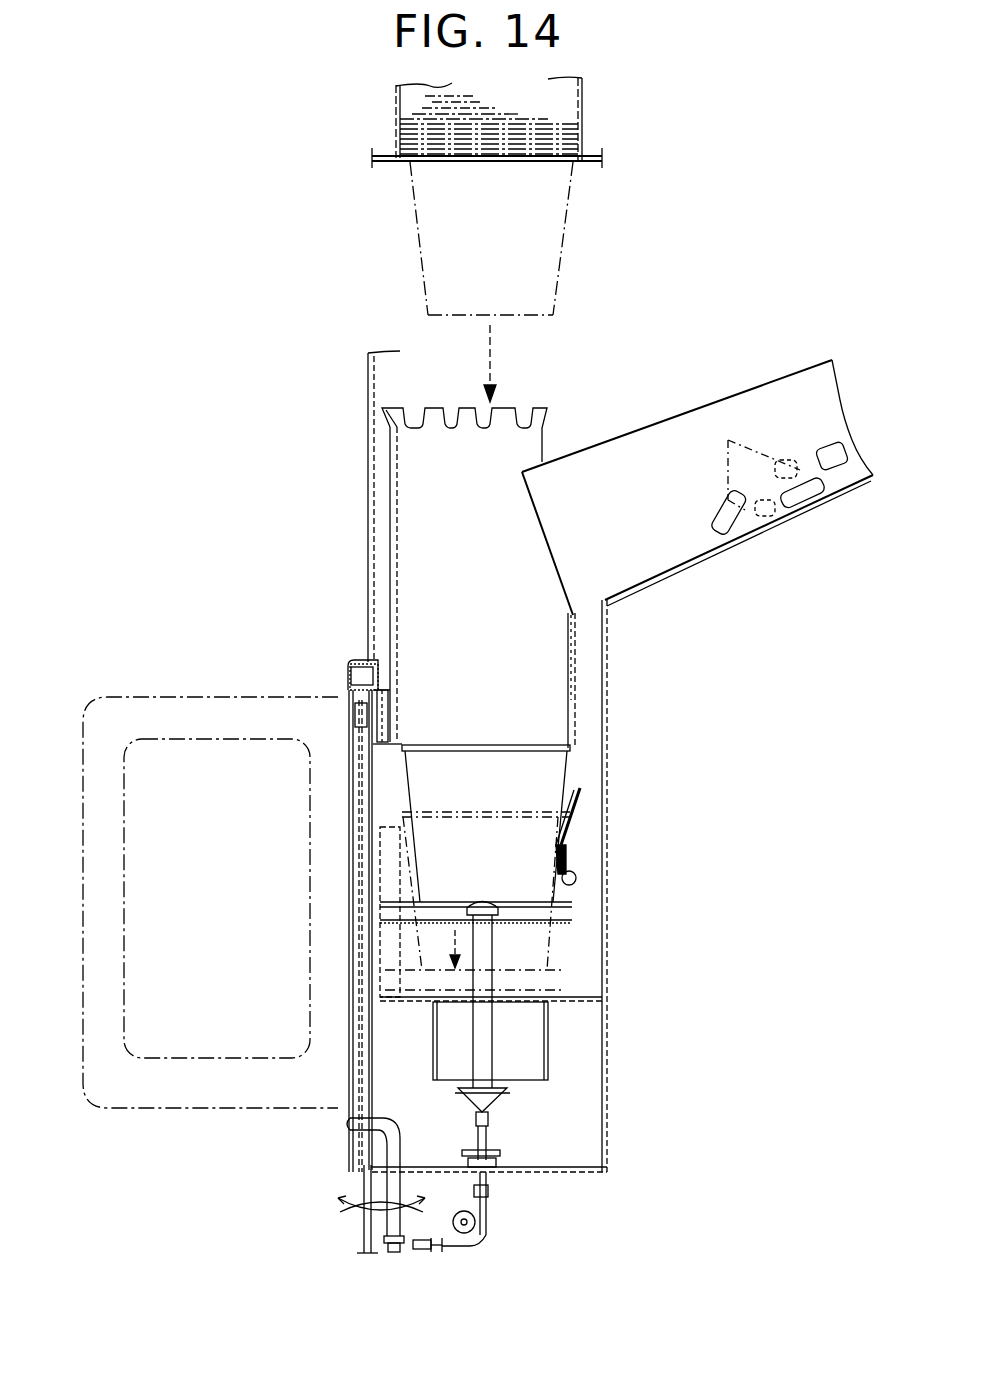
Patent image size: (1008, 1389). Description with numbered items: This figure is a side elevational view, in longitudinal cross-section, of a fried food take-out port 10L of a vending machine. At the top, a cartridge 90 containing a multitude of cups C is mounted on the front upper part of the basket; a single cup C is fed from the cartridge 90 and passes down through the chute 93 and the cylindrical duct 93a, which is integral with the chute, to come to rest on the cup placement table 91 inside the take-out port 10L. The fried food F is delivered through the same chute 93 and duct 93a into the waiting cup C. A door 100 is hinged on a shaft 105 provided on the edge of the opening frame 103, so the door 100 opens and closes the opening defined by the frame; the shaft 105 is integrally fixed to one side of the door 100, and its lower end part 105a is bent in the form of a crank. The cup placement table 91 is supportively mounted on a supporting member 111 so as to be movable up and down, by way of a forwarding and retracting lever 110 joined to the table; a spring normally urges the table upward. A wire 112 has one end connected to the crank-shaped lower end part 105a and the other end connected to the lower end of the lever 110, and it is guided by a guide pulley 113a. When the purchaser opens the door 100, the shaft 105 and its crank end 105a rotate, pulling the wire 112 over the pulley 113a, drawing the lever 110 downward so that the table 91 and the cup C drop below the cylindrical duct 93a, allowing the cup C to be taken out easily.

The cartridge 90 is at (600, 124).
The cup C is at (548, 262).
The fried food F is at (779, 471).
The chute 93 is at (665, 585).
The cylindrical duct 93a is at (578, 688).
The cup placement table 91 is at (572, 869).
The opening frame 103 is at (362, 662).
The fried food take-out port 10L is at (348, 727).
The door 100 is at (212, 702).
The shaft 105 is at (352, 951).
The forwarding and retracting lever 110 is at (478, 1052).
The supporting member 111 is at (567, 1000).
The wire 112 is at (492, 1140).
The guide pulley 113a is at (485, 1232).
The lower end part of shaft 105a is at (372, 1236).